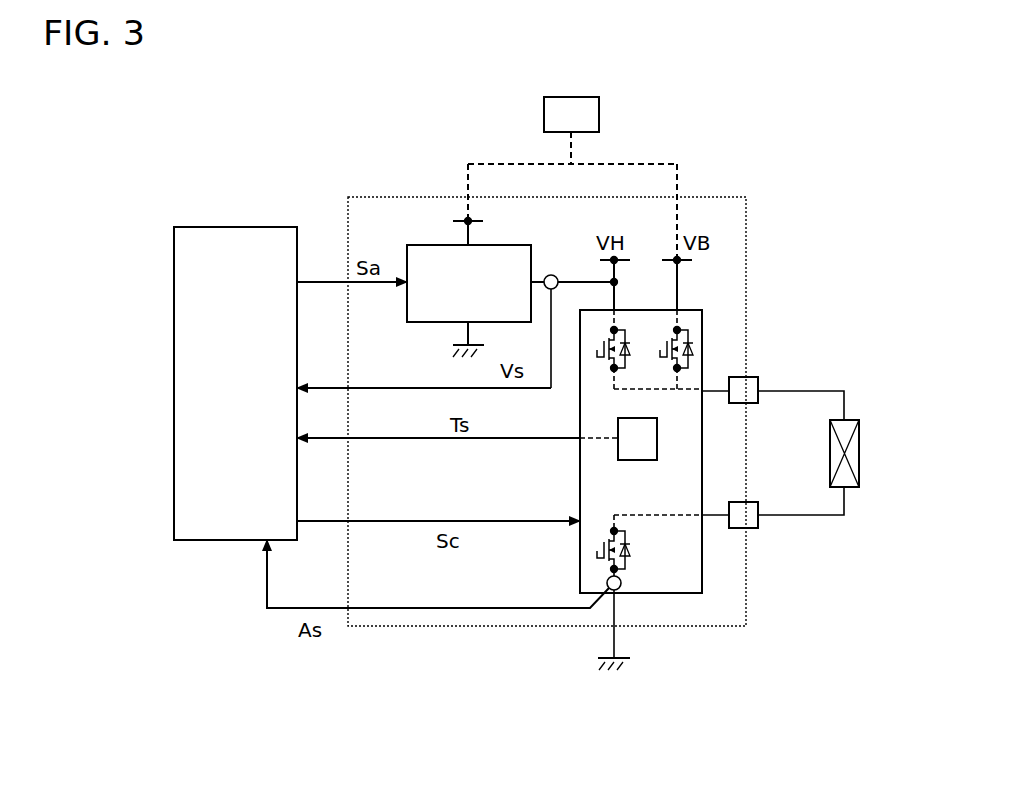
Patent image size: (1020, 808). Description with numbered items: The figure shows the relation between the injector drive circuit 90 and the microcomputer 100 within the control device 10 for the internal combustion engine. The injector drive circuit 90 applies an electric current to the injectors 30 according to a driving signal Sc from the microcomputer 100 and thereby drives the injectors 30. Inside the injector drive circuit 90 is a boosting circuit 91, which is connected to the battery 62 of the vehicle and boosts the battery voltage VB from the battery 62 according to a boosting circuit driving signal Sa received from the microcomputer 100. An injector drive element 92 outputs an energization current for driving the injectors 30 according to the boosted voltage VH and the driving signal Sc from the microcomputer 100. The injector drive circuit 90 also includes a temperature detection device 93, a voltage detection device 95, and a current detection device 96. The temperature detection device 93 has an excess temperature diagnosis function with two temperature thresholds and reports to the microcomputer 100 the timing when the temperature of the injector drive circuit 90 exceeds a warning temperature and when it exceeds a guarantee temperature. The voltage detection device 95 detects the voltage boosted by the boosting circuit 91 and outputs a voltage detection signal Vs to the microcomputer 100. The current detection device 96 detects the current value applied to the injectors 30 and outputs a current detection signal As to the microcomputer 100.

The control device 10 is at (159, 112).
The microcomputer 100 is at (233, 227).
The injector drive circuit 90 is at (363, 197).
The battery 62 is at (600, 118).
The boosting circuit 91 is at (433, 322).
The voltage detection device 95 is at (552, 275).
The injector drive element 92 is at (580, 566).
The temperature detection device 93 is at (640, 452).
The current detection device 96 is at (620, 590).
The injector 30 is at (860, 447).